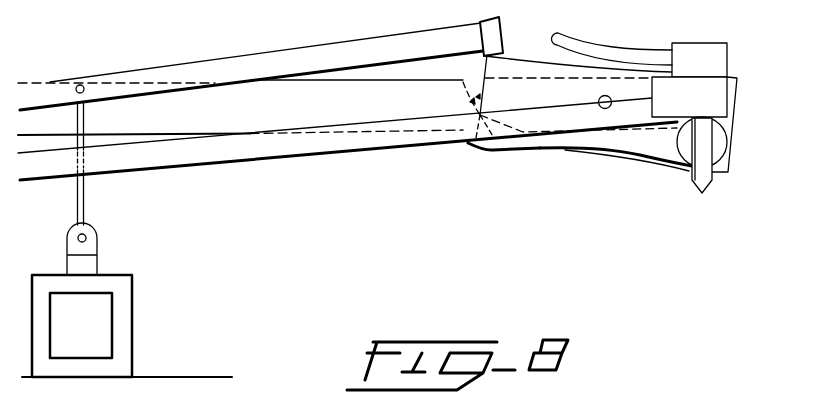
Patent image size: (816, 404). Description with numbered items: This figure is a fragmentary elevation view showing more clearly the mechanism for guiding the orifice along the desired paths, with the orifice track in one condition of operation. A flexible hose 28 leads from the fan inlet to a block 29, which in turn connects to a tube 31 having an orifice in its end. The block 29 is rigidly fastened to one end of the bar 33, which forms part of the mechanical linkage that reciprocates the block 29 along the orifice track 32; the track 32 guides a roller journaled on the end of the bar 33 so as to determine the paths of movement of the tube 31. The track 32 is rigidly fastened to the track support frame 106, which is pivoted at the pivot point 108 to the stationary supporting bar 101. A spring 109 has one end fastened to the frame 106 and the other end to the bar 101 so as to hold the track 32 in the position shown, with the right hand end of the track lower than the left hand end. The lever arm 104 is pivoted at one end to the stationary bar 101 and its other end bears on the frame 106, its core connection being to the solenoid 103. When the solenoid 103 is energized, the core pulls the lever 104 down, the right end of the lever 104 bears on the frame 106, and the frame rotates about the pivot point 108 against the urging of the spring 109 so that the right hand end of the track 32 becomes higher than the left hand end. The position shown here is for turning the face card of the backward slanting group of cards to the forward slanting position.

The stationary bar 101 is at (234, 112).
The bar 33 is at (313, 153).
The lever arm 104 is at (337, 45).
The frame member 106 is at (525, 62).
The spring 109 is at (459, 97).
The pivot point 108 is at (598, 97).
The orifice track 32 is at (650, 139).
The block 29 is at (722, 83).
The flexible hose 28 is at (602, 46).
The tube 31 is at (690, 173).
The solenoid 103 is at (133, 291).